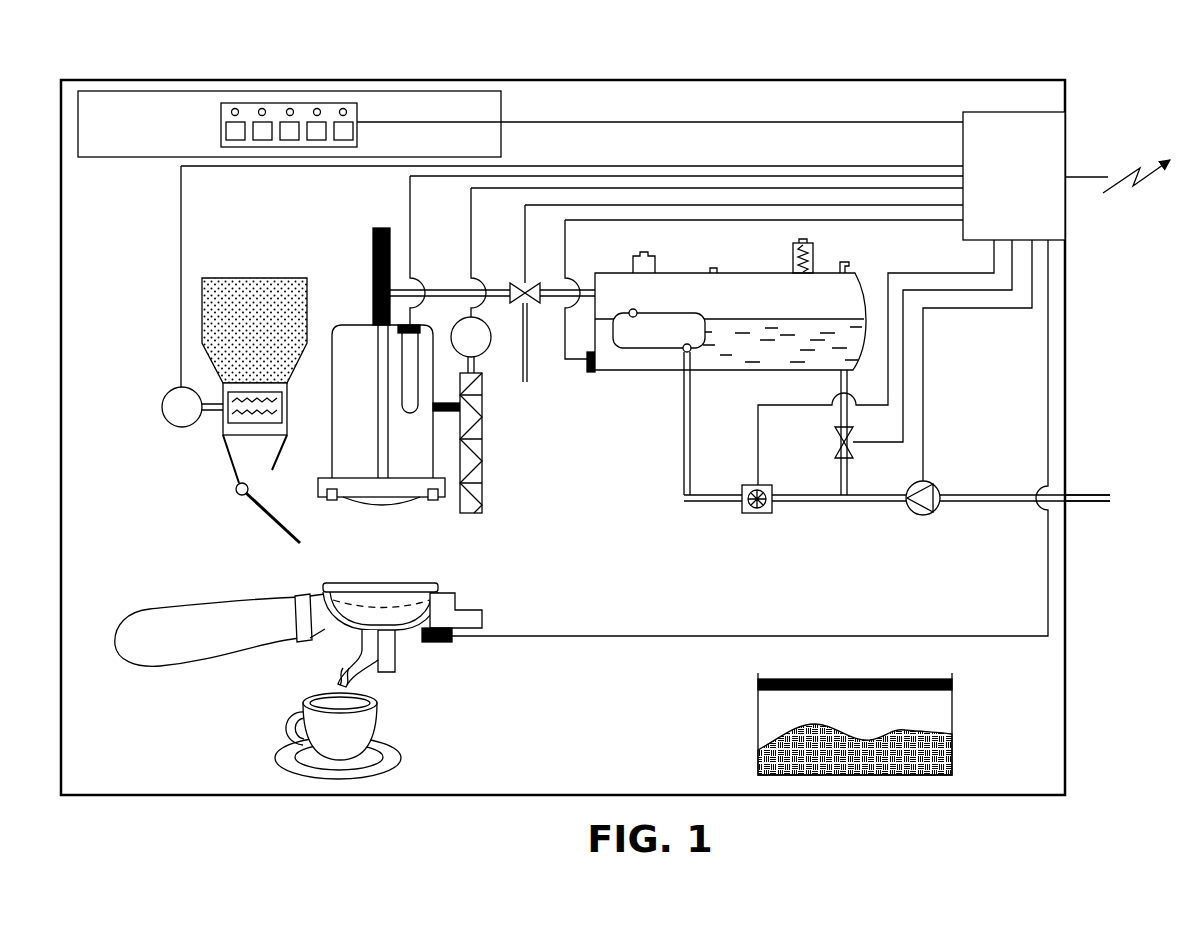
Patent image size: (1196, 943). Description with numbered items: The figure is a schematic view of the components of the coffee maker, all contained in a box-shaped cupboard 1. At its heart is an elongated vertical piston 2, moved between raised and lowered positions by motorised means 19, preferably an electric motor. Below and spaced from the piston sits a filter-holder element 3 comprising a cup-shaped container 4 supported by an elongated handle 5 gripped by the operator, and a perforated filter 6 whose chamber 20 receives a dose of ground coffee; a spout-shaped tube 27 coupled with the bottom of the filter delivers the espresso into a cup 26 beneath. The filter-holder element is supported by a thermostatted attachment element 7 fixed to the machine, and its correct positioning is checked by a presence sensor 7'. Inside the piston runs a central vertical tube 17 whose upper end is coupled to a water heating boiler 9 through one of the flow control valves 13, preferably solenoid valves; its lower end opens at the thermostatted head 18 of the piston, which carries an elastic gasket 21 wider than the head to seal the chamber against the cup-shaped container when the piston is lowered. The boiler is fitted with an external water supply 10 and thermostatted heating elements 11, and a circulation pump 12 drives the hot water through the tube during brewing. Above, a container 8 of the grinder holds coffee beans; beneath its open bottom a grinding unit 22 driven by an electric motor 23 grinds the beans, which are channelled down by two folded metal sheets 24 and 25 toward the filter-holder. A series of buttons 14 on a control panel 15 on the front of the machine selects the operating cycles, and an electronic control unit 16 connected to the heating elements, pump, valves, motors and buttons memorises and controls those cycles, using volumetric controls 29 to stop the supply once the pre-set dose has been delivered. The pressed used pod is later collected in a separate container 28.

The box-shaped cupboard 1 is at (778, 70).
The elongated vertical piston 2 is at (330, 312).
The filter-holder element 3 is at (405, 632).
The cup-shaped container 4 is at (426, 585).
The elongated handle 5 is at (162, 653).
The perforated filter 6 is at (396, 592).
The attachment element 7 is at (472, 598).
The presence sensor 7' is at (463, 659).
The container of a grinder 8 is at (243, 262).
The water heating boiler 9 is at (862, 276).
The external water supply 10 is at (1140, 512).
The thermostatted heating elements 11 is at (410, 326).
The circulation pump 12 is at (925, 516).
The flow control valves 13 is at (530, 303).
The buttons 14 is at (222, 110).
The control panel 15 is at (508, 104).
The electronic control unit 16 is at (1006, 108).
The central vertical tube 17 is at (370, 364).
The head of the piston 18 is at (383, 507).
The motorised means 19 is at (480, 352).
The chamber of the perforated filter 20 is at (358, 600).
The elastic gasket 21 is at (330, 500).
The grinding unit 22 is at (222, 436).
The electric motor 23 is at (172, 386).
The metal sheet 24 is at (232, 457).
The metal sheet 25 is at (272, 520).
The cup 26 is at (284, 731).
The spout-shaped tube 27 is at (386, 680).
The separate container 28 is at (757, 758).
The volumetric controls 29 is at (757, 514).